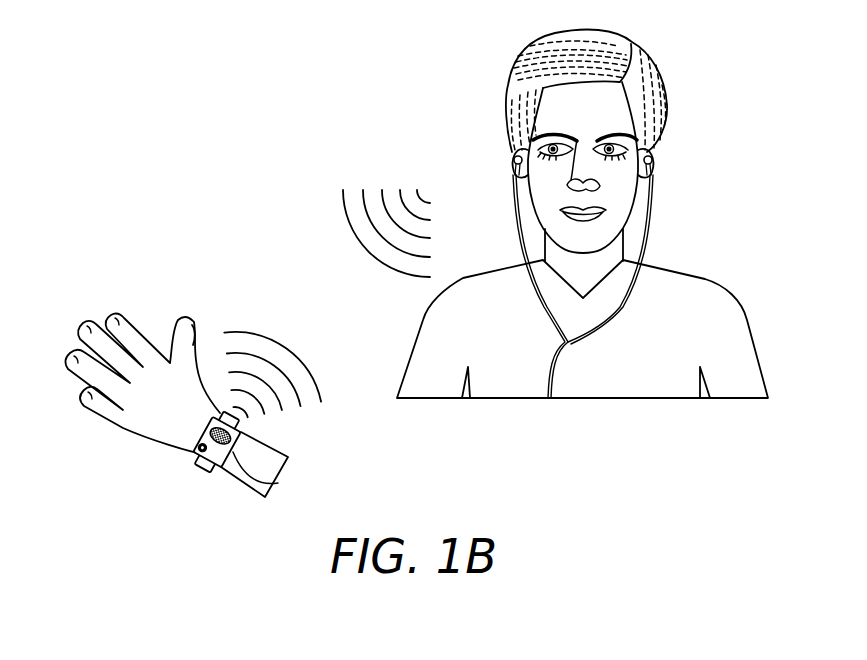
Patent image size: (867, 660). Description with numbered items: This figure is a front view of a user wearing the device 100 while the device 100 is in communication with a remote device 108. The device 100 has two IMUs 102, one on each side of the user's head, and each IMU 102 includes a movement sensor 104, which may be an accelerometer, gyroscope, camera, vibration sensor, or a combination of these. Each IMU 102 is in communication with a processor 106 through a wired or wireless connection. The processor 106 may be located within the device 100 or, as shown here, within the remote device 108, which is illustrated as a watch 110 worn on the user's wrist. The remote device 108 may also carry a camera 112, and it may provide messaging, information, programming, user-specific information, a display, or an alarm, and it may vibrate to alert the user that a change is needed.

The device 100 is at (274, 72).
The IMU 102 is at (485, 127).
The movement sensor 104 is at (513, 163).
The processor 106 is at (280, 483).
The remote device 108 is at (320, 458).
The watch 110 is at (222, 411).
The camera 112 is at (204, 453).